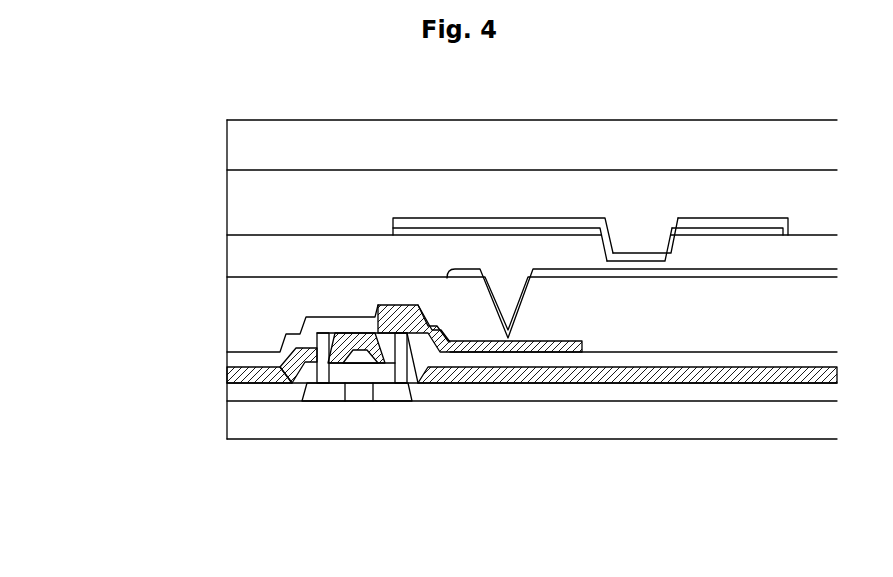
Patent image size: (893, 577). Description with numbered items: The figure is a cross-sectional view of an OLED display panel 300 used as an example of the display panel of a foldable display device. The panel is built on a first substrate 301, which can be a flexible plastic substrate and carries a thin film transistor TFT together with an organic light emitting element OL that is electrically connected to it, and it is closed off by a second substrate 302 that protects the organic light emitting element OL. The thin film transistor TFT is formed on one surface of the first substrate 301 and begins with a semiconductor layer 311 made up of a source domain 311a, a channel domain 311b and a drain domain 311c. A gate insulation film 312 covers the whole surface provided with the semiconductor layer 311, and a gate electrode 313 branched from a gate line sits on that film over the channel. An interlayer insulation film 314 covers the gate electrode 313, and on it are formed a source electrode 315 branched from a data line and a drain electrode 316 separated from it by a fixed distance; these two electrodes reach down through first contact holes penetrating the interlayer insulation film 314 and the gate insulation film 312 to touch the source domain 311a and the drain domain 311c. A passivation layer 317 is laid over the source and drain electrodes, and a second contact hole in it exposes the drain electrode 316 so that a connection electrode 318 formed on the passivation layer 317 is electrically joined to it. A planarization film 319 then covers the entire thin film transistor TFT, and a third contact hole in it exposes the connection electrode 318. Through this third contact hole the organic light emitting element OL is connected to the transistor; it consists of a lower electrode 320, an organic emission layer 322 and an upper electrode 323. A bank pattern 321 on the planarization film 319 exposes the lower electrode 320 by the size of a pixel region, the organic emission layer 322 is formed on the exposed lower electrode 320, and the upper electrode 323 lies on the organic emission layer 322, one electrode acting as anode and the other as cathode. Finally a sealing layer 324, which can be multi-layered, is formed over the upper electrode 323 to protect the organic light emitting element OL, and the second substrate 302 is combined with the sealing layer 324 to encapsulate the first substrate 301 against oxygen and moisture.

The OLED display panel 300 is at (172, 136).
The first substrate 301 is at (227, 425).
The second substrate 302 is at (227, 142).
The semiconductor layer 311 is at (357, 451).
The source domain 311a is at (317, 399).
The channel domain 311b is at (354, 399).
The drain domain 311c is at (396, 430).
The gate insulation film 312 is at (227, 392).
The gate electrode 313 is at (280, 368).
The interlayer insulation film 314 is at (227, 376).
The source electrode 315 is at (296, 352).
The drain electrode 316 is at (433, 362).
The passivation layer 317 is at (227, 352).
The connection electrode 318 is at (532, 358).
The planarization film 319 is at (227, 315).
The lower electrode 320 is at (569, 266).
The bank pattern 321 is at (227, 256).
The organic emission layer 322 is at (636, 252).
The upper electrode 323 is at (715, 219).
The sealing layer 324 is at (227, 210).
The organic light emitting element OL is at (725, 85).
The thin film transistor TFT is at (443, 517).